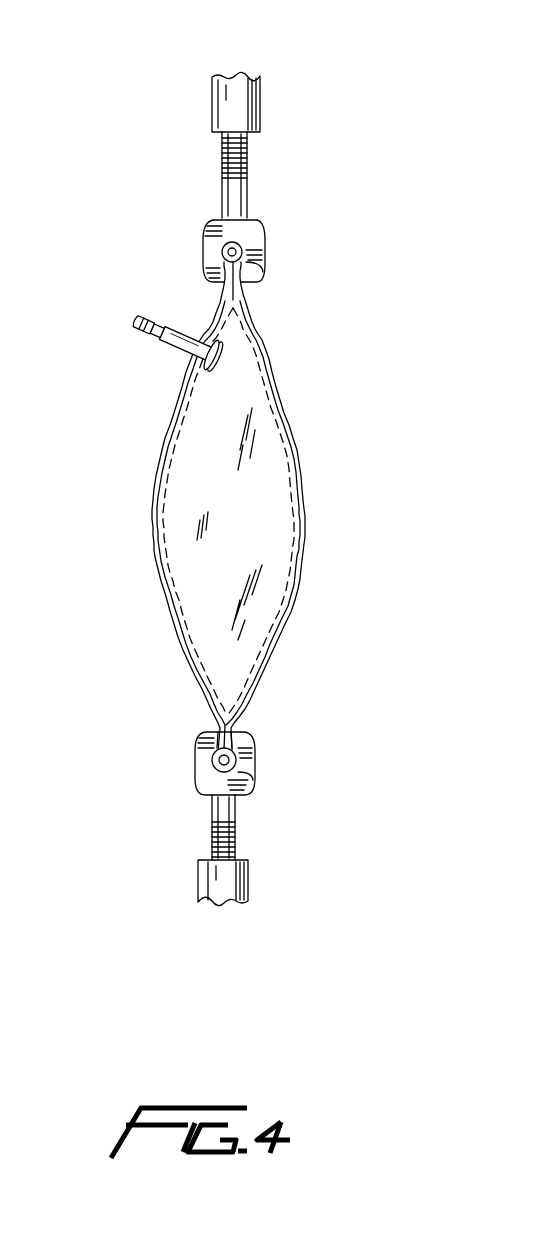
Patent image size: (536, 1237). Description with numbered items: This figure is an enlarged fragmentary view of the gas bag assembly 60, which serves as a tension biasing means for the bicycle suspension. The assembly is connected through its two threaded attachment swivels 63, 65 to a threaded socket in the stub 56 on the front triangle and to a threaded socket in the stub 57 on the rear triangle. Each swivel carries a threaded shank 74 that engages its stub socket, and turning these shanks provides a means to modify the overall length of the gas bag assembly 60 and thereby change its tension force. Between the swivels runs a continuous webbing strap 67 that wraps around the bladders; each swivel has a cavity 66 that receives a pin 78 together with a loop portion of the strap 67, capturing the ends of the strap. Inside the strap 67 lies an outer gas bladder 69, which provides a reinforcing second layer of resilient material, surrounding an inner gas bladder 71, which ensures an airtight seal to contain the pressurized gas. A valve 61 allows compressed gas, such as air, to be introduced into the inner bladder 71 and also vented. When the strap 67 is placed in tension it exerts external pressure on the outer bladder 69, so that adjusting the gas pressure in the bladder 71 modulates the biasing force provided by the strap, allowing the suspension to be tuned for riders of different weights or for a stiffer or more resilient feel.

The stub 56 is at (253, 100).
The stub 57 is at (208, 875).
The gas bag assembly 60 is at (215, 507).
The valve 61 is at (168, 338).
The attachment swivel 63 is at (200, 776).
The attachment swivel 65 is at (252, 232).
The cavity 66 is at (262, 268).
The webbing strap 67 is at (273, 638).
The outer gas bladder 69 is at (167, 592).
The inner gas bladder 71 is at (277, 596).
The threaded shank 74 is at (222, 168).
The pin 78 is at (222, 252).